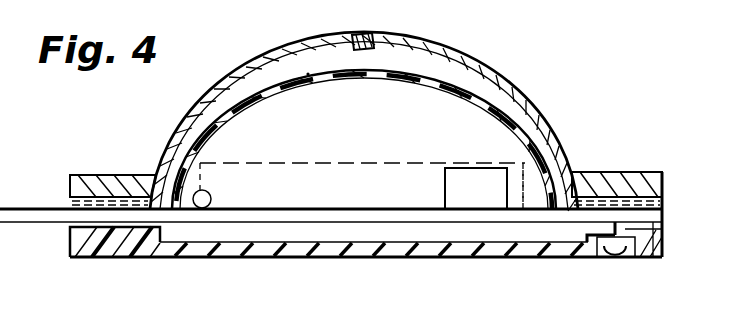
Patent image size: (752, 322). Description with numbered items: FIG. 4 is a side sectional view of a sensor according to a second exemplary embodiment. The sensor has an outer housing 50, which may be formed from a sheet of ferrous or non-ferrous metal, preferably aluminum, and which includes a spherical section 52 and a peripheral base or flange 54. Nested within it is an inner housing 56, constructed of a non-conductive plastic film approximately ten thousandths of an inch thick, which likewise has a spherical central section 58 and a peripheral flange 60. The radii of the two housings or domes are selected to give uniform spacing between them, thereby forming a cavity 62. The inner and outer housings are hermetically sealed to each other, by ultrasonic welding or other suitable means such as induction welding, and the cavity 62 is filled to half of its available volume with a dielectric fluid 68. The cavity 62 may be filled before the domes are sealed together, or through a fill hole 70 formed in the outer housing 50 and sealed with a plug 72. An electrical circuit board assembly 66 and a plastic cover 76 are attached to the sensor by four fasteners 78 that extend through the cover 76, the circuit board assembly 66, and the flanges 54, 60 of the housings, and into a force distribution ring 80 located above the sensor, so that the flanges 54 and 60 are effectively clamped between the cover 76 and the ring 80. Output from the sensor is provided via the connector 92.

The outer housing 50 is at (533, 110).
The spherical section 52 is at (273, 55).
The peripheral base or flange 54 is at (87, 174).
The inner housing 56 is at (458, 83).
The spherical central section 58 is at (297, 85).
The peripheral flange 60 is at (70, 232).
The cavity 62 is at (308, 74).
The electrical circuit board assembly 66 is at (428, 209).
The dielectric fluid 68 is at (540, 157).
The fill hole 70 is at (363, 49).
The plug 72 is at (372, 37).
The plastic cover 76 is at (100, 258).
The fasteners 78 is at (663, 238).
The force distribution ring 80 is at (662, 173).
The connector 92 is at (23, 209).